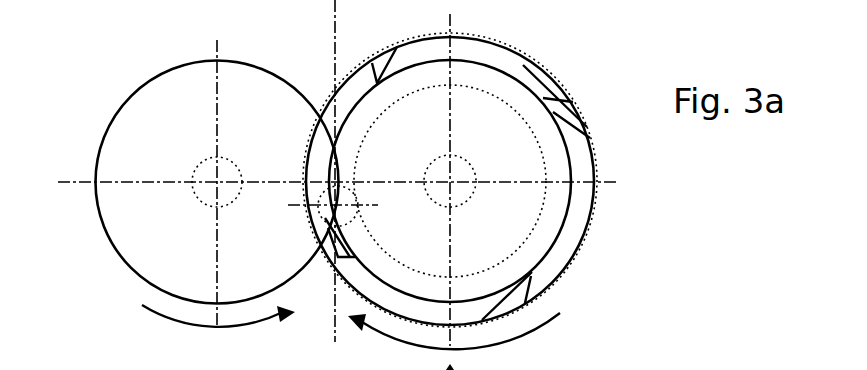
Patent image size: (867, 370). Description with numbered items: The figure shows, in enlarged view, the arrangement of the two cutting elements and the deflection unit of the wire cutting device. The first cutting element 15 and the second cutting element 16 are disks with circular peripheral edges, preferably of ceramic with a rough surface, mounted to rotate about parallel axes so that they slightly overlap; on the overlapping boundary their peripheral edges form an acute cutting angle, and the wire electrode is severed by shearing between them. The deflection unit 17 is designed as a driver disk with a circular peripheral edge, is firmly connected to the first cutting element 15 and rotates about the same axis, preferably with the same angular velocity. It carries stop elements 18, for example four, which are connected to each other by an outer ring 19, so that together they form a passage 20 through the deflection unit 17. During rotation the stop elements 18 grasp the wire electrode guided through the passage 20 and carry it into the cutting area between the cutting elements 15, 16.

The first cutting element 15 is at (507, 83).
The second cutting element 16 is at (128, 235).
The deflection unit 17 is at (597, 200).
The stop elements 18 is at (571, 104).
The outer ring 19 is at (583, 248).
The passage 20 is at (548, 280).